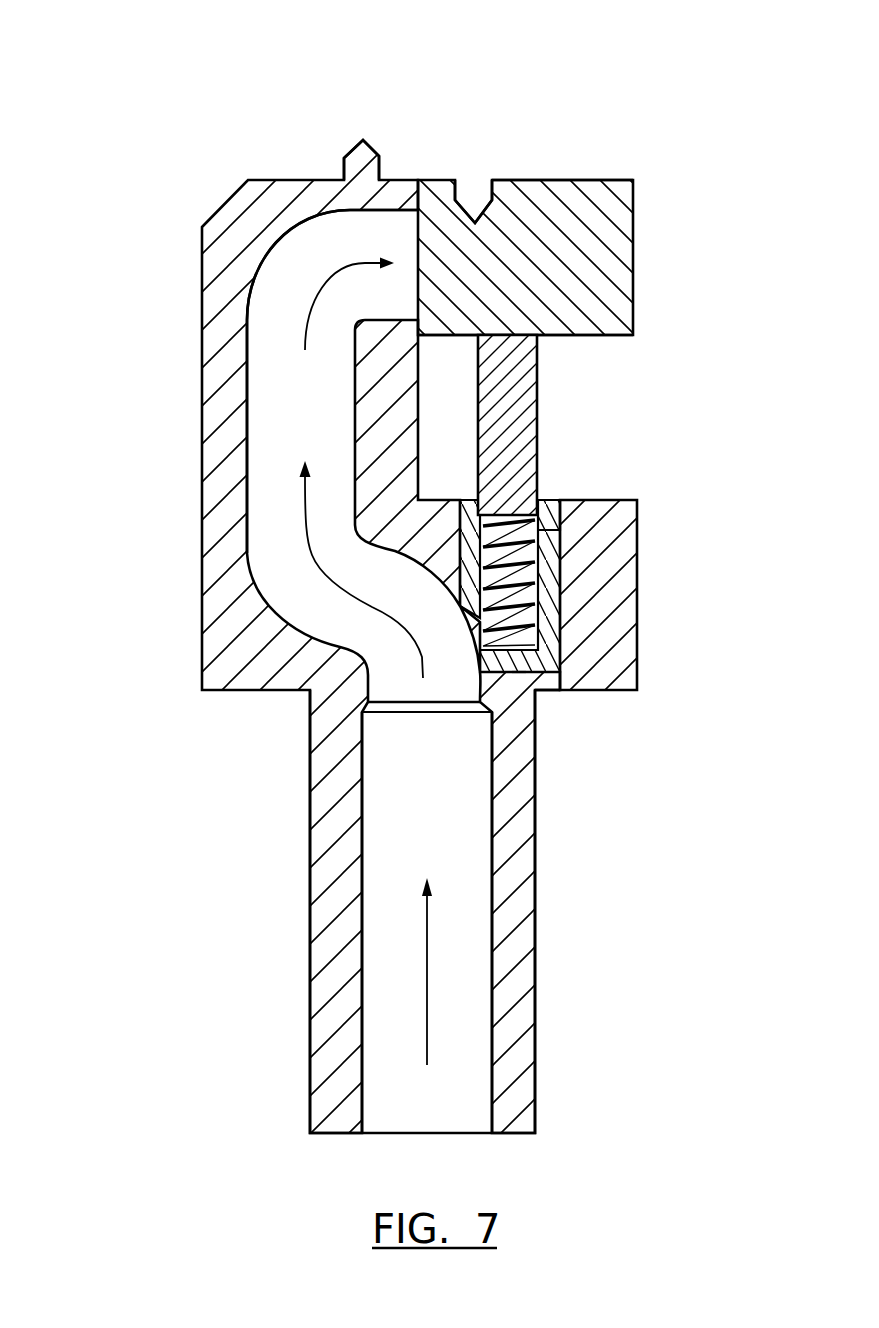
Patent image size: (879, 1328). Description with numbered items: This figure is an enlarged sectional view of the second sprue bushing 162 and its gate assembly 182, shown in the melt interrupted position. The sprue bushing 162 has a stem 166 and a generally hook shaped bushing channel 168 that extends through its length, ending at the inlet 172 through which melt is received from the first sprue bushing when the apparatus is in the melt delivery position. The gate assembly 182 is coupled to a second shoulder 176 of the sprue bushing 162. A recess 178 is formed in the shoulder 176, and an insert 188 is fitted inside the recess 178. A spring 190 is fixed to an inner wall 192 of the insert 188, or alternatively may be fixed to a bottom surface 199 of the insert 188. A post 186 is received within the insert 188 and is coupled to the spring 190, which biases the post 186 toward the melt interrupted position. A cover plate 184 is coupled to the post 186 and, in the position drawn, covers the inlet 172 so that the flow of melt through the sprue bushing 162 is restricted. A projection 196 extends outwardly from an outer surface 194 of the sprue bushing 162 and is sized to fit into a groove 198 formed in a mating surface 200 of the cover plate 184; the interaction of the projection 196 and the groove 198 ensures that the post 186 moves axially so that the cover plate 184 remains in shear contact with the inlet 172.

The sprue bushing 162 is at (102, 136).
The outer surface 194 is at (258, 180).
The projection 196 is at (351, 150).
The inlet 172 is at (417, 273).
The groove 198 is at (475, 196).
The mating surface 200 is at (543, 180).
The second gate assembly 182 is at (606, 172).
The cover plate 184 is at (605, 249).
The post 186 is at (498, 392).
The second shoulder 176 is at (604, 500).
The recess 178 is at (552, 526).
The insert 188 is at (546, 556).
The inner wall 192 is at (545, 592).
The spring 190 is at (545, 617).
The bottom surface 199 is at (518, 673).
The stem 166 is at (297, 1000).
The bushing channel 168 is at (475, 1007).